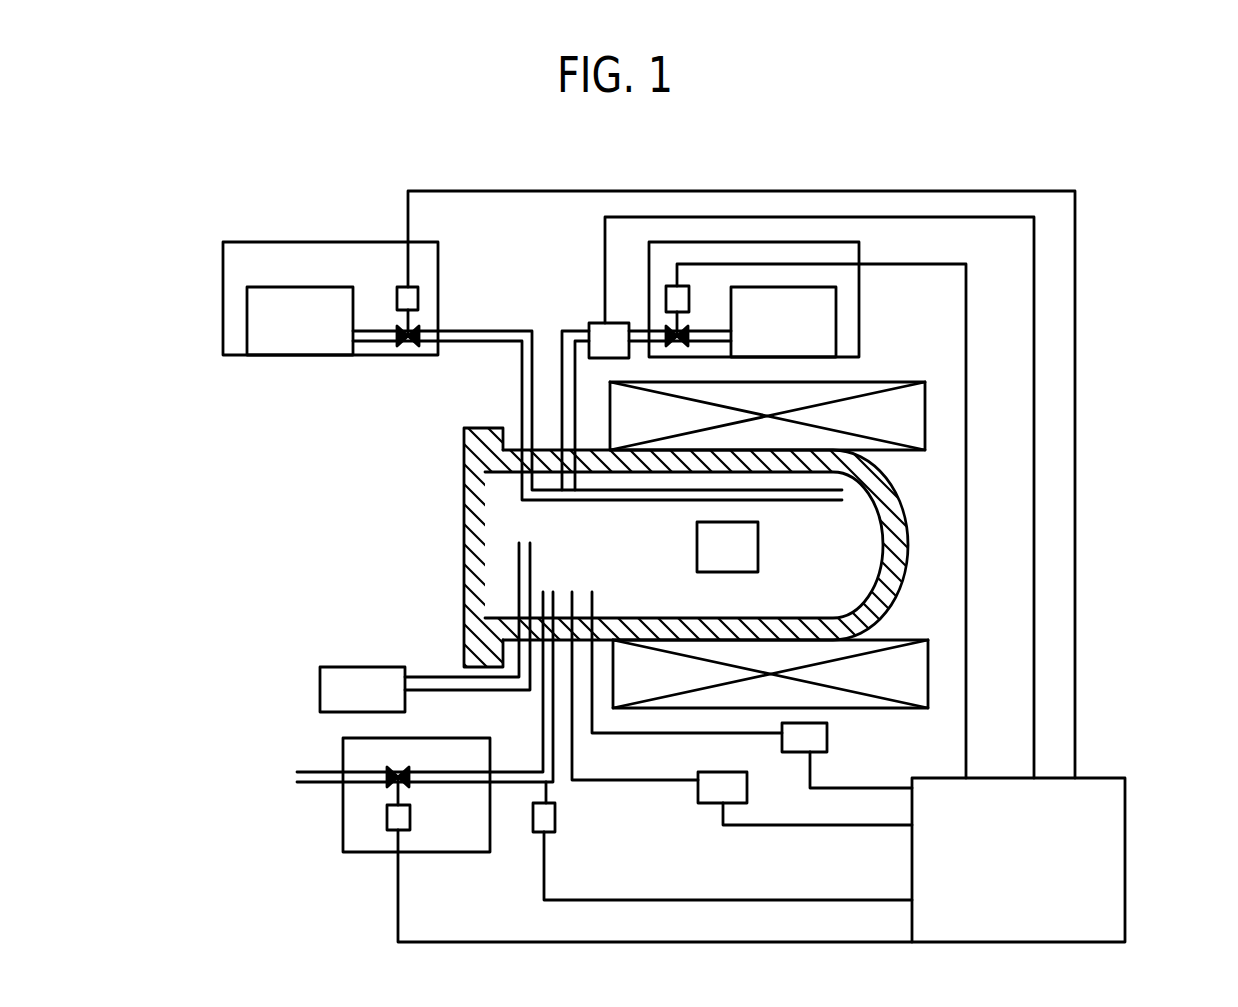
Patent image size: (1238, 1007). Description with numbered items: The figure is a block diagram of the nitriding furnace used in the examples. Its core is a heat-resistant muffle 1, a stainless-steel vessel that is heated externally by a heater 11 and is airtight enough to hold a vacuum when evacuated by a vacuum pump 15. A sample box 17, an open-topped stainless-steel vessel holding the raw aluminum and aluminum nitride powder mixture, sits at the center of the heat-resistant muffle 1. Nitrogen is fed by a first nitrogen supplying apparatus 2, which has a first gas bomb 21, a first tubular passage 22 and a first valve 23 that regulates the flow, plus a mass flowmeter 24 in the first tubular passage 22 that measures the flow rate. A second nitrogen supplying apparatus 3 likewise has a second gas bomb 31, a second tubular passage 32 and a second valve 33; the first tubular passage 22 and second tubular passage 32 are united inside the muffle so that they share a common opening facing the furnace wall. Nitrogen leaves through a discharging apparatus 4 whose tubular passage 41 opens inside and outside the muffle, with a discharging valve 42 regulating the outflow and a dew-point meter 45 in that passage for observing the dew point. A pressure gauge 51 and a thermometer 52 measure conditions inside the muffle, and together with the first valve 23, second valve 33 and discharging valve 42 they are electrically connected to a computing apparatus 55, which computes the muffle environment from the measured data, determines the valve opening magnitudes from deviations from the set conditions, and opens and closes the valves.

The heat-resistant muffle 1 is at (905, 548).
The heater 11 is at (905, 410).
The vacuum pump 15 is at (330, 685).
The sample box 17 is at (740, 540).
The first nitrogen supplying apparatus 2 is at (796, 255).
The first gas bomb 21 is at (830, 312).
The first tubular passage 22 is at (567, 330).
The first valve 23 is at (675, 287).
The mass flowmeter 24 is at (598, 323).
The second nitrogen supplying apparatus 3 is at (305, 255).
The second gas bomb 31 is at (280, 357).
The second tubular passage 32 is at (455, 330).
The second valve 33 is at (402, 285).
The discharging apparatus 4 is at (360, 840).
The tubular passage 41 is at (467, 778).
The discharging valve 42 is at (405, 770).
The dew-point meter 45 is at (547, 815).
The pressure gauge 51 is at (702, 797).
The thermometer 52 is at (815, 738).
The computing apparatus 55 is at (1100, 845).